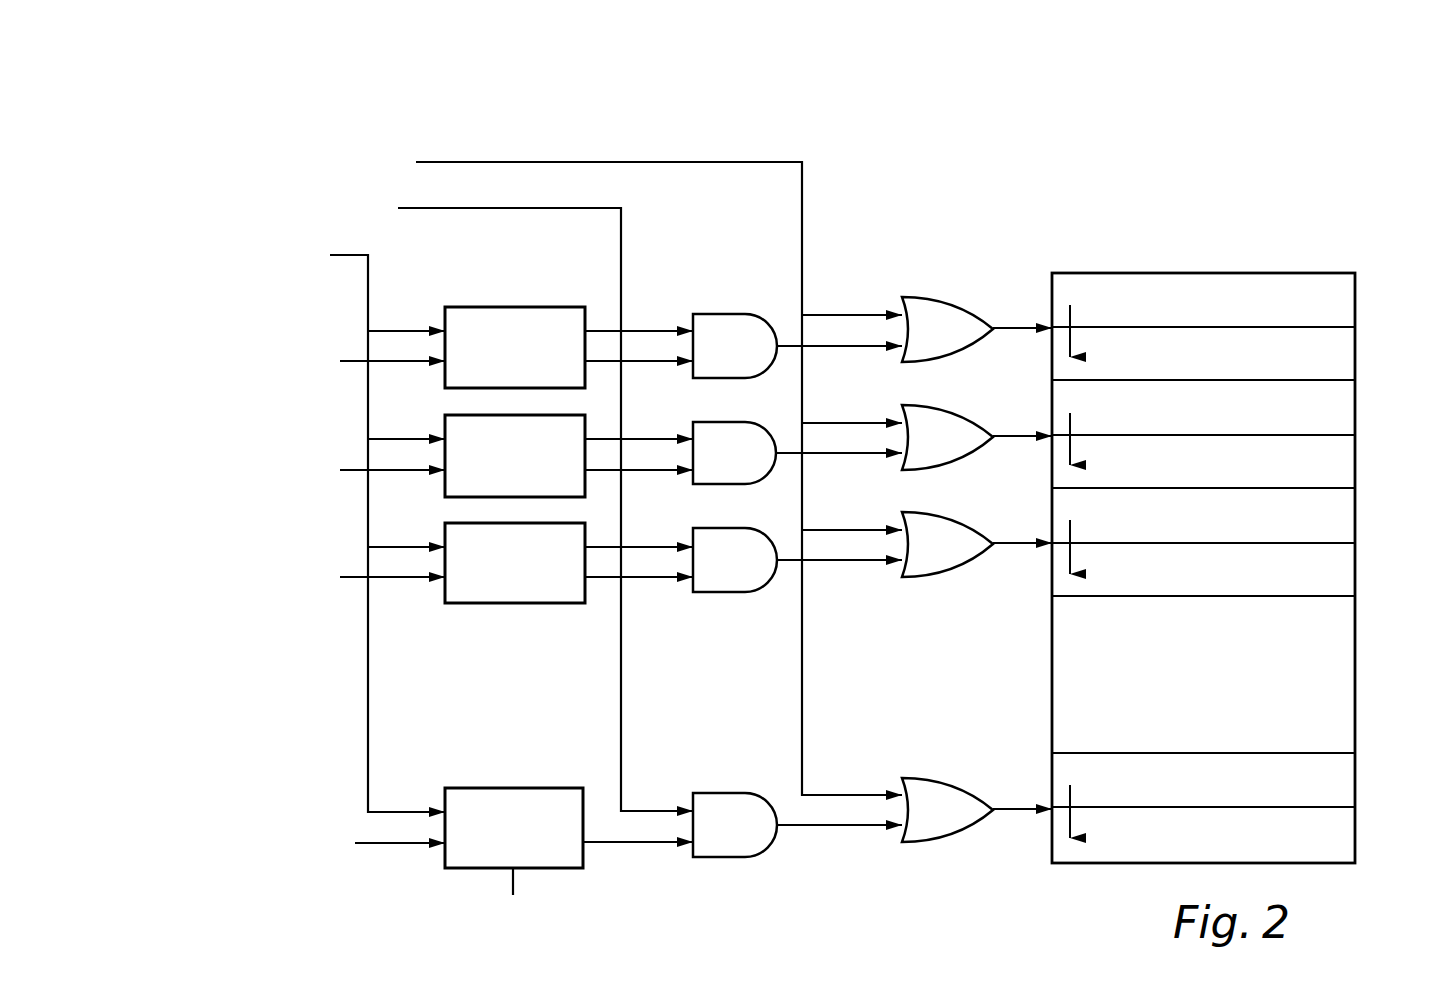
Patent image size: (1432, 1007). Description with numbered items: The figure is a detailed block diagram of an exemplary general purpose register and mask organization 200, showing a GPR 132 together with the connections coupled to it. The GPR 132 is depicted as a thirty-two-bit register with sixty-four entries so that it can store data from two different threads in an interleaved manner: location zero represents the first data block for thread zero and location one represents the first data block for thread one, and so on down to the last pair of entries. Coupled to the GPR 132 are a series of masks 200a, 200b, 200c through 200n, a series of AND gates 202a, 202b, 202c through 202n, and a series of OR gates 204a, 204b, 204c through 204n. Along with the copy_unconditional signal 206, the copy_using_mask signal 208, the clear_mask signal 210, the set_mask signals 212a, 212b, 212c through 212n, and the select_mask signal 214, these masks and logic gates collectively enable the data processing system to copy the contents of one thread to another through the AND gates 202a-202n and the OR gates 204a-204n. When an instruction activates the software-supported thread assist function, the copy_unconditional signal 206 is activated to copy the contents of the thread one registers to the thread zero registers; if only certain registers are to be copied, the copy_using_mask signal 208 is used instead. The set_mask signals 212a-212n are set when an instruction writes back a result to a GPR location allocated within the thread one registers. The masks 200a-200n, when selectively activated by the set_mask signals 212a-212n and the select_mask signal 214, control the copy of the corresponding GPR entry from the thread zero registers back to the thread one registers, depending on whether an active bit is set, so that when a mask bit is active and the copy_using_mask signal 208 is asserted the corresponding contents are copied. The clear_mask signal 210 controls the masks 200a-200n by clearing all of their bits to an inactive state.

The GPR and mask organization 200 is at (1258, 137).
The general purpose register (GPR) 132 is at (1185, 261).
The copy_unconditional signal 206 is at (402, 176).
The copy_using_mask signal 208 is at (388, 221).
The clear_mask signal 210 is at (320, 268).
The set_mask signal 212a is at (332, 375).
The set_mask signal 212b is at (332, 483).
The set_mask signal 212c is at (332, 590).
The set_mask signal 212n is at (345, 856).
The mask 200a is at (484, 377).
The mask 200b is at (484, 485).
The mask 200c is at (484, 593).
The mask 200n is at (483, 858).
The AND gate 202a is at (762, 358).
The AND gate 202b is at (762, 465).
The AND gate 202c is at (762, 572).
The AND gate 202n is at (762, 837).
The OR gate 204a is at (977, 342).
The OR gate 204b is at (977, 450).
The OR gate 204c is at (977, 557).
The OR gate 204n is at (977, 823).
The select_mask signal 214 is at (608, 930).